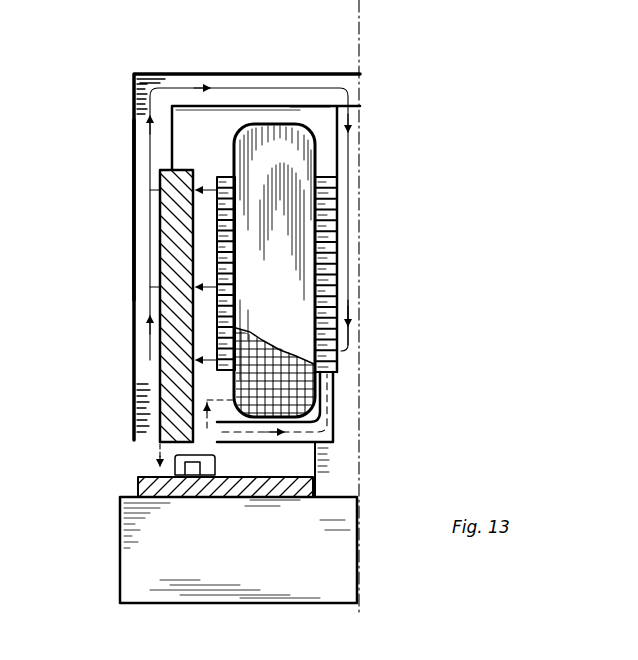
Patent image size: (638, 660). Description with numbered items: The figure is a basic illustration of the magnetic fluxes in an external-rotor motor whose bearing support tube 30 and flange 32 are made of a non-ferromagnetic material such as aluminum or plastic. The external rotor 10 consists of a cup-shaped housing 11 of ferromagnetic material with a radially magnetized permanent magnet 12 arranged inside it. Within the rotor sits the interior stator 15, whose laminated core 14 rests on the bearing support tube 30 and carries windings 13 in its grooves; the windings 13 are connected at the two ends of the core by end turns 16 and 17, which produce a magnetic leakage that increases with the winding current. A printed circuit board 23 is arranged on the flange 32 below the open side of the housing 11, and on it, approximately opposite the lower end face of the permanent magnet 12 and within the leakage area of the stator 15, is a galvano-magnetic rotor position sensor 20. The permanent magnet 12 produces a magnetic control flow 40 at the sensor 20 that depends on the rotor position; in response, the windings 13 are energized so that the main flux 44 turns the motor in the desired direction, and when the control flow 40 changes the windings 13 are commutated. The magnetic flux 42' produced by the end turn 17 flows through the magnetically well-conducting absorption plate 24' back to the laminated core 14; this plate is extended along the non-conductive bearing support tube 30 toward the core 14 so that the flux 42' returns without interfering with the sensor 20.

The external rotor 10 is at (218, 72).
The cup-shaped housing 11 is at (134, 150).
The permanent magnet 12 is at (172, 238).
The windings 13 is at (292, 268).
The laminated core 14 is at (328, 208).
The interior stator 15 is at (312, 120).
The end turn 16 is at (284, 146).
The end turn 17 is at (277, 405).
The galvano-magnetic rotor position sensor 20 is at (215, 465).
The printed circuit board 23 is at (140, 485).
The absorption plate 24' is at (315, 411).
The bearing support tube 30 is at (353, 342).
The flange 32 is at (137, 562).
The magnetic control flow 40 is at (160, 452).
The magnetic flux 42' is at (151, 411).
The main flux 44 is at (290, 84).